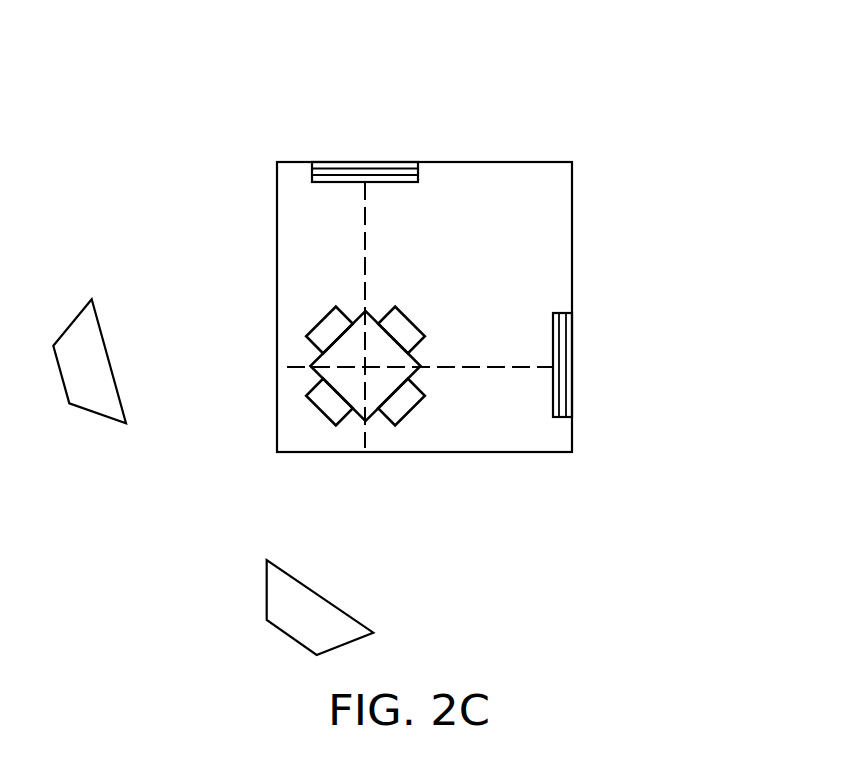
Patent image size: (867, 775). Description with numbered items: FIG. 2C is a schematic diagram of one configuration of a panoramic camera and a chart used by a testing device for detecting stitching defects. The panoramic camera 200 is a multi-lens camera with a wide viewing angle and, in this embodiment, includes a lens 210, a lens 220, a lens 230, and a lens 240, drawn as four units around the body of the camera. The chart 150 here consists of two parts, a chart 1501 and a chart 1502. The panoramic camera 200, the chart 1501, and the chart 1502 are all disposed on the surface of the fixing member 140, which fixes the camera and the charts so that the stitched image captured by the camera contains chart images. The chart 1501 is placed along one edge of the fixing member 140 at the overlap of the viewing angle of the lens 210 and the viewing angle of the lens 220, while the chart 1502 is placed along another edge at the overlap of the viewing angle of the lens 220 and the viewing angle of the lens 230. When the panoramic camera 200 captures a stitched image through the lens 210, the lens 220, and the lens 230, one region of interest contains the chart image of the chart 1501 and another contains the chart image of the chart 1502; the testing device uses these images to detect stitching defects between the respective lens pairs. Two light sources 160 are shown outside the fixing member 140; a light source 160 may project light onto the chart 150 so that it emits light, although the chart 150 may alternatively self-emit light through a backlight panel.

The fixing member 140 is at (572, 250).
The chart 150 is at (548, 263).
The chart 1501 is at (389, 162).
The chart 1502 is at (572, 389).
The light source 160 is at (68, 326).
The panoramic camera 200 is at (328, 358).
The lens 210 is at (320, 322).
The lens 220 is at (413, 315).
The lens 230 is at (413, 413).
The lens 240 is at (323, 415).